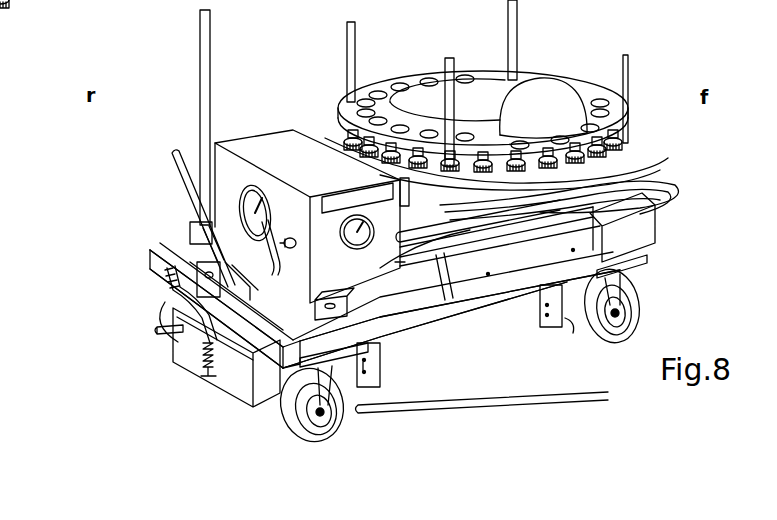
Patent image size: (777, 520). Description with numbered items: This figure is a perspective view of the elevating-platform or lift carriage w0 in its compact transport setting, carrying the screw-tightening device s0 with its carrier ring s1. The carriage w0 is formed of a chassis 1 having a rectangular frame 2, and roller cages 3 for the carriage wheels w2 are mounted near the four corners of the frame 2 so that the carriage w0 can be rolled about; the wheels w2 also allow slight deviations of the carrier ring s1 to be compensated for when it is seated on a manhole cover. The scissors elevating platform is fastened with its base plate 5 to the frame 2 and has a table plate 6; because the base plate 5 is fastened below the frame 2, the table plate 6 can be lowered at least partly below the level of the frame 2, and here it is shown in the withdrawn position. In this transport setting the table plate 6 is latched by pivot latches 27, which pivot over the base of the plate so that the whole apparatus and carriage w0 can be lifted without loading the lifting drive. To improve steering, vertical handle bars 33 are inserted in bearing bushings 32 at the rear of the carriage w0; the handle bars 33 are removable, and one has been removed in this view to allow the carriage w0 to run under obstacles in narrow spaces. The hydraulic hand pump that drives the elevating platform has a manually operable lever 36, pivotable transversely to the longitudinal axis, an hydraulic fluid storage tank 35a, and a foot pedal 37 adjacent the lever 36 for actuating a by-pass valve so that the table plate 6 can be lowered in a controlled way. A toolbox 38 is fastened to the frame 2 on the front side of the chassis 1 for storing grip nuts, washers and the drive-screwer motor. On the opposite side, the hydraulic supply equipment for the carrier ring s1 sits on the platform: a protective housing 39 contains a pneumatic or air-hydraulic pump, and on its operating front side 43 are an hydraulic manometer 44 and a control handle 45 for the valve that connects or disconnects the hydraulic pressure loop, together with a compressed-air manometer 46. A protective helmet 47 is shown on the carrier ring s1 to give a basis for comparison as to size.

The chassis 1 is at (148, 259).
The rectangular frame 2 is at (168, 243).
The roller cages 3 is at (335, 400).
The base plate 5 is at (475, 334).
The table plate 6 is at (440, 268).
The pivot latches 27 is at (392, 268).
The bearing bushings 32 is at (190, 225).
The handle bars 33 is at (200, 36).
The hydraulic fluid storage tank 35a is at (193, 345).
The manually operable lever 36 is at (173, 164).
The foot pedal 37 is at (165, 286).
The toolbox 38 is at (642, 233).
The protective housing 39 is at (268, 143).
The operating front side 43 is at (228, 170).
The hydraulic manometer 44 is at (262, 210).
The control handle 45 is at (284, 255).
The compressed-air manometer 46 is at (357, 250).
The protective helmet 47 is at (556, 90).
The screw-tightening device s0 is at (407, 75).
The carrier ring s1 is at (480, 75).
The elevating-platform carriage w0 is at (585, 359).
The carriage wheels w2 is at (290, 420).